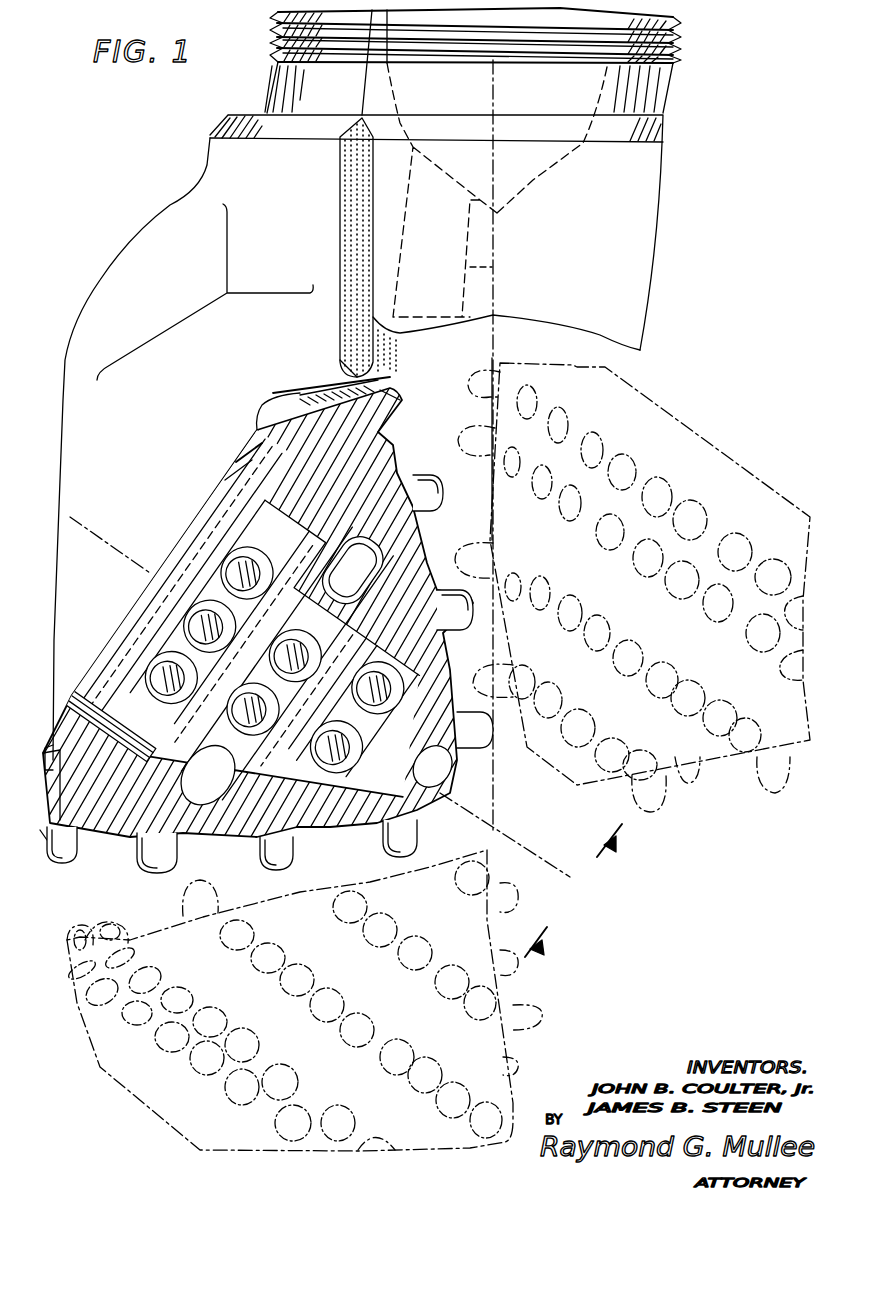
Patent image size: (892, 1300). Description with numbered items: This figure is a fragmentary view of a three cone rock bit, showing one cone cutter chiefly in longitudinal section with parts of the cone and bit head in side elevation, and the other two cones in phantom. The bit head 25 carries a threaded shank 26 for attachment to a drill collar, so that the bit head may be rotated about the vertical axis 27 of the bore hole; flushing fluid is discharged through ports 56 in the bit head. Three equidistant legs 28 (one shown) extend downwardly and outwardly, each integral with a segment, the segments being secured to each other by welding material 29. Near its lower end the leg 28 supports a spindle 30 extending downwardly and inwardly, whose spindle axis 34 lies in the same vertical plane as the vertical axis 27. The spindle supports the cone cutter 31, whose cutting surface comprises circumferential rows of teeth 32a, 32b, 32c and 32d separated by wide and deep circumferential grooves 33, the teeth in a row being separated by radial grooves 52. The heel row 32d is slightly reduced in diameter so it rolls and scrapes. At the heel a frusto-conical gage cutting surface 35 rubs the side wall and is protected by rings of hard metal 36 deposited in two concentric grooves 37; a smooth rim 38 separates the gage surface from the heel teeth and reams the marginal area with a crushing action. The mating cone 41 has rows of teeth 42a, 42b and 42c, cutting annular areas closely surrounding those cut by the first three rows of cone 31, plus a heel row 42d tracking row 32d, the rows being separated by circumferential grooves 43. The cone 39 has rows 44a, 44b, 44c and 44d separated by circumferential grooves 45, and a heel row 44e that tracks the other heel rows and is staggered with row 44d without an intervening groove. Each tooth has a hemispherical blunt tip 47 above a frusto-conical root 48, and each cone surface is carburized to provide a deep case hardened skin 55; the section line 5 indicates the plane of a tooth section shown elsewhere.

The section line 5- 5 is at (608, 846).
The bit head 25 is at (652, 220).
The threaded shank 26 is at (280, 40).
The vertical axis 27 is at (500, 216).
The leg 28 is at (157, 503).
The welding material 29 is at (345, 195).
The spindle 30 is at (235, 488).
The cone cutter 31 is at (262, 443).
The row of teeth 32a is at (390, 855).
The row of teeth 32b is at (262, 862).
The row of teeth 32c is at (140, 860).
The heel row of teeth 32d is at (75, 857).
The circumferential grooves 33 is at (395, 444).
The spindle axis 34 is at (99, 512).
The gage cutting surface 35 is at (317, 387).
The rings of hard metal 36 is at (273, 393).
The concentric grooves 37 is at (262, 420).
The smooth rim 38 is at (390, 378).
The cone 39 is at (178, 1133).
The cone 41 is at (680, 410).
The row of teeth 42a is at (665, 810).
The row of teeth 42b is at (760, 812).
The row of teeth 42c is at (466, 428).
The heel row of teeth 42d is at (478, 372).
The circumferential grooves 43 is at (490, 646).
The row of teeth 44a is at (532, 900).
The row of teeth 44b is at (546, 1017).
The row of teeth 44c is at (180, 890).
The row of teeth 44d is at (120, 920).
The heel row of teeth 44e is at (75, 925).
The circumferential grooves 45 is at (512, 965).
The blunt tip 47 is at (443, 493).
The root 48 is at (437, 520).
The radial grooves 52 is at (563, 538).
The case hardened skin 55 is at (165, 785).
The ports 56 is at (492, 268).